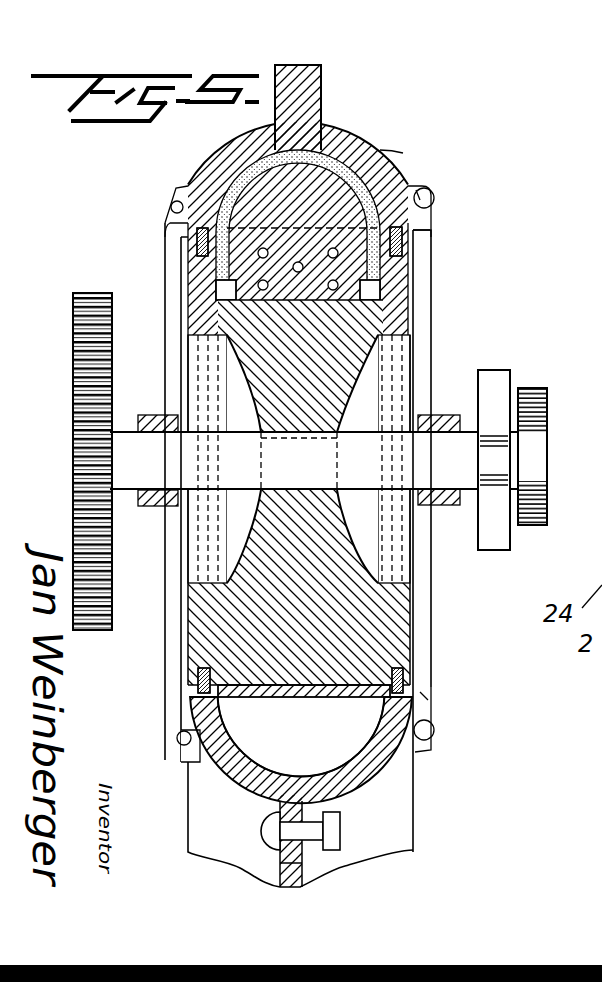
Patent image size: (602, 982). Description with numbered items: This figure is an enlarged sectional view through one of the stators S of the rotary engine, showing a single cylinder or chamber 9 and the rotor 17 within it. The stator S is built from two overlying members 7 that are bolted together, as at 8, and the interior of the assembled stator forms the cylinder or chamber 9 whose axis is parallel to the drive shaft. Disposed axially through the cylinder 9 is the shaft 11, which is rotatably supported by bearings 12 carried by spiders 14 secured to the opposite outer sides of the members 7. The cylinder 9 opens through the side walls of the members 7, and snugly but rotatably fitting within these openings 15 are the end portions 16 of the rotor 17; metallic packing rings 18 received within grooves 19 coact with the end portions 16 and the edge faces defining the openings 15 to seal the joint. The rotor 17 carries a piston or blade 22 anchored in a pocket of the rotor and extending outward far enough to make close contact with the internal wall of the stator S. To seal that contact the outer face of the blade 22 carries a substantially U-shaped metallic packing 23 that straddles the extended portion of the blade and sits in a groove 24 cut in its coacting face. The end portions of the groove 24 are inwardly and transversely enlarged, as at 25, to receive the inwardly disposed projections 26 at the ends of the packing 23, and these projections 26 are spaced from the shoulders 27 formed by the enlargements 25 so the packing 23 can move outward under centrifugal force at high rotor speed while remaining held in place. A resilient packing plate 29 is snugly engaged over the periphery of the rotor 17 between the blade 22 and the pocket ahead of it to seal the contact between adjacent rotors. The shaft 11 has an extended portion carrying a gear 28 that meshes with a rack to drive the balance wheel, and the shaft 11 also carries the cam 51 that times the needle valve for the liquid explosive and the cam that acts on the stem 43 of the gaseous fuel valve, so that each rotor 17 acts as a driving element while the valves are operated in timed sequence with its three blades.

The overlying members 7 is at (365, 782).
The bolt 8 is at (263, 838).
The cylinders or chambers 9 is at (301, 736).
The shaft 11 is at (437, 467).
The bearings 12 is at (177, 425).
The spiders 14 is at (166, 260).
The openings 15 is at (430, 228).
The end portions 16 is at (415, 672).
The rotor 17 is at (350, 636).
The metallic packing rings 18 is at (420, 193).
The grooves 19 is at (425, 232).
The piston or blade 22 is at (342, 188).
The metallic packing 23 is at (242, 183).
The groove 24 is at (318, 156).
The enlargements 25 is at (222, 298).
The projections 26 is at (217, 279).
The shoulders 27 is at (190, 217).
The gear 28 is at (77, 384).
The resilient packing plates 29 is at (338, 697).
The stem 43 is at (547, 500).
The cam 51 is at (503, 482).
The stator S is at (403, 153).